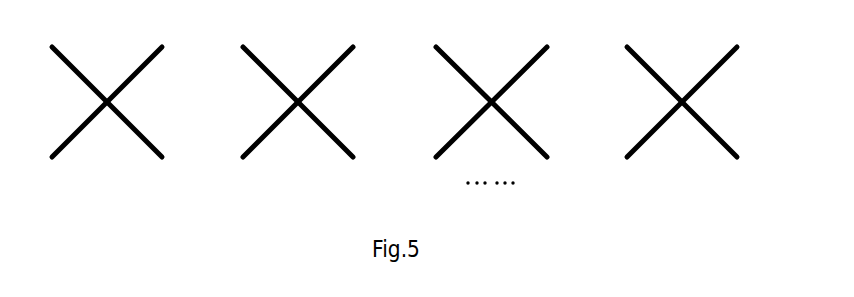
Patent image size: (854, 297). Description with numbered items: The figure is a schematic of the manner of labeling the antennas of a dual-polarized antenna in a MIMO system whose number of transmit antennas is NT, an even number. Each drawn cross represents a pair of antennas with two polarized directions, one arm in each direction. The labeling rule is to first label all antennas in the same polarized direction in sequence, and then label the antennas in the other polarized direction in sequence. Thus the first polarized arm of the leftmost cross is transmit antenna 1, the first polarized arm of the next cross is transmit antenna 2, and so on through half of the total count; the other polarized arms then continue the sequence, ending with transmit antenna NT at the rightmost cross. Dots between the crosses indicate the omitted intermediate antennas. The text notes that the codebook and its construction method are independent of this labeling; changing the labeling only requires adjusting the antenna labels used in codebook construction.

The transmit antenna 1 is at (107, 121).
The transmit antenna 2 is at (297, 121).
The transmit antenna NT is at (686, 122).